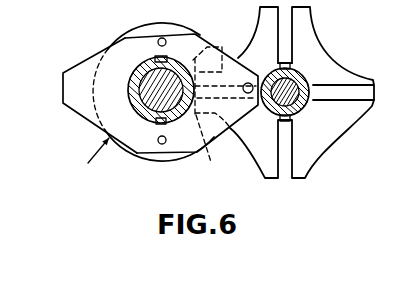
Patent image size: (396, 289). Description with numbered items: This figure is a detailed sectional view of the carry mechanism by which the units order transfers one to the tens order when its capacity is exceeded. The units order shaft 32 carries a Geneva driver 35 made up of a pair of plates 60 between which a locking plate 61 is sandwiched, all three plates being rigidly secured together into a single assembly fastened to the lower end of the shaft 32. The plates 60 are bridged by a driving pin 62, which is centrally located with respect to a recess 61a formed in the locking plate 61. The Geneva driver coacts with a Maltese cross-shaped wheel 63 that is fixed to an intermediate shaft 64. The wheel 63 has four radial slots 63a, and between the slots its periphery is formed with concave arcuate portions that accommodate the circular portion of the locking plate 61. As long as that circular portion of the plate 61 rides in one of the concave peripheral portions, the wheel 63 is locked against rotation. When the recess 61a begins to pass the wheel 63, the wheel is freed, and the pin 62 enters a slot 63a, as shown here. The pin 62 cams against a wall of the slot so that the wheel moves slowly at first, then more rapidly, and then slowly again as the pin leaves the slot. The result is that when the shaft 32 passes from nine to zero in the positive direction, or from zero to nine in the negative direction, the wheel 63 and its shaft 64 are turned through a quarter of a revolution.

The units order shaft 32 is at (172, 62).
The Geneva driver 35 is at (88, 156).
The plates 60 is at (77, 112).
The locking plate 61 is at (150, 155).
The recess 61a is at (210, 163).
The driving pin 62 is at (249, 95).
The Maltese cross-shaped wheel 63 is at (326, 50).
The radial slots 63a is at (220, 53).
The intermediate shaft 64 is at (304, 108).